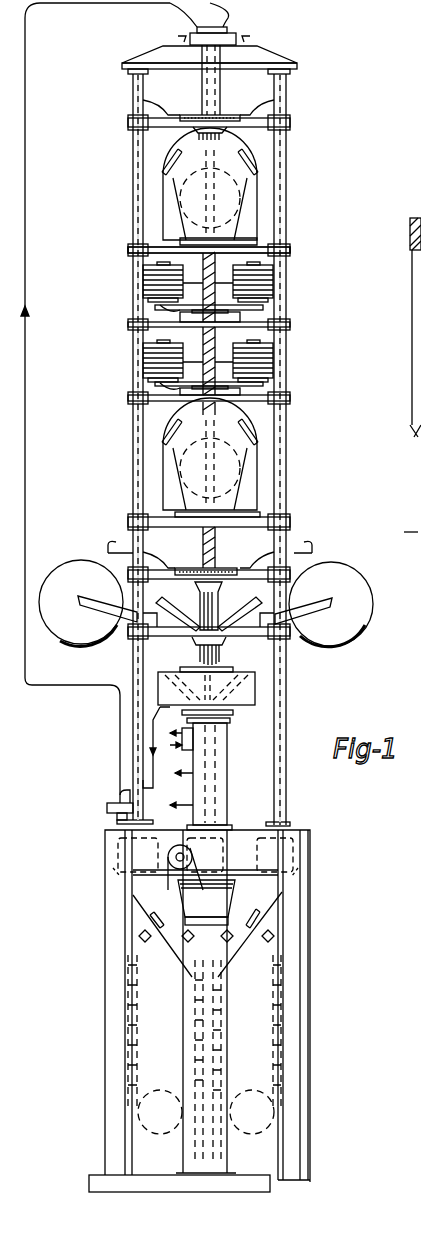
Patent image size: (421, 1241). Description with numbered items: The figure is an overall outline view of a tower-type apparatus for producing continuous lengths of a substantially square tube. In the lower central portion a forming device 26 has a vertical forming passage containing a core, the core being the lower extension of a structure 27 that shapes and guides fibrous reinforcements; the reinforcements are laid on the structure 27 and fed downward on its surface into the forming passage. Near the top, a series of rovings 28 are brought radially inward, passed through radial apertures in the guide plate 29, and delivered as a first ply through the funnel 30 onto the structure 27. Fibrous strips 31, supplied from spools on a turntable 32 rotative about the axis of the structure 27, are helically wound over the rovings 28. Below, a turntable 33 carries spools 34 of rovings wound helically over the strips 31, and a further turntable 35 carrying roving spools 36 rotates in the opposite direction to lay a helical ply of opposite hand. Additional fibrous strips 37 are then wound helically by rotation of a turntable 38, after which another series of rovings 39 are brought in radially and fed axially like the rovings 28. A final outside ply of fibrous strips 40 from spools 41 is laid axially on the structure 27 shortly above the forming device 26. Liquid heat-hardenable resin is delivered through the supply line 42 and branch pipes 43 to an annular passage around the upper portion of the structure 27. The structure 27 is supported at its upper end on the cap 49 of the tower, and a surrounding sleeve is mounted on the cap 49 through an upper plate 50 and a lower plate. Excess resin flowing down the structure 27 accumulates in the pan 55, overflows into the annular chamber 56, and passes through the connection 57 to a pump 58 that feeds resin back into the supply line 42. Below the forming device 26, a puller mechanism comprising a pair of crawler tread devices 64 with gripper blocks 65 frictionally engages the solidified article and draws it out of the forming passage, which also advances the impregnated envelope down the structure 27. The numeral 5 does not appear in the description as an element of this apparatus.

The partial element 5 is at (411, 540).
The forming device 26 is at (228, 790).
The structure for shaping and guiding fibrous reinforcements 27 is at (224, 102).
The rovings 28 is at (133, 96).
The guide plate 29 is at (186, 113).
The funnel 30 is at (222, 128).
The fibrous strips 31 is at (166, 192).
The turntable 32 is at (172, 241).
The turntable 33 is at (152, 312).
The spools of rovings 34 is at (162, 275).
The turntable 35 is at (152, 385).
The roving spools 36 is at (152, 361).
The fibrous strips 37 is at (166, 478).
The turntable 38 is at (176, 514).
The rovings 39 is at (122, 550).
The fibrous strips 40 is at (150, 600).
The spools 41 is at (80, 646).
The supply line 42 is at (31, 52).
The branch pipes 43 is at (196, 18).
The cap 49 is at (272, 54).
The upper plate 50 is at (408, 312).
The reservoir or pan 55 is at (245, 712).
The annular chamber 56 is at (256, 692).
The connection 57 is at (153, 765).
The pump 58 is at (106, 804).
The crawler tread devices 64 is at (124, 1003).
The gripper blocks 65 is at (126, 1072).